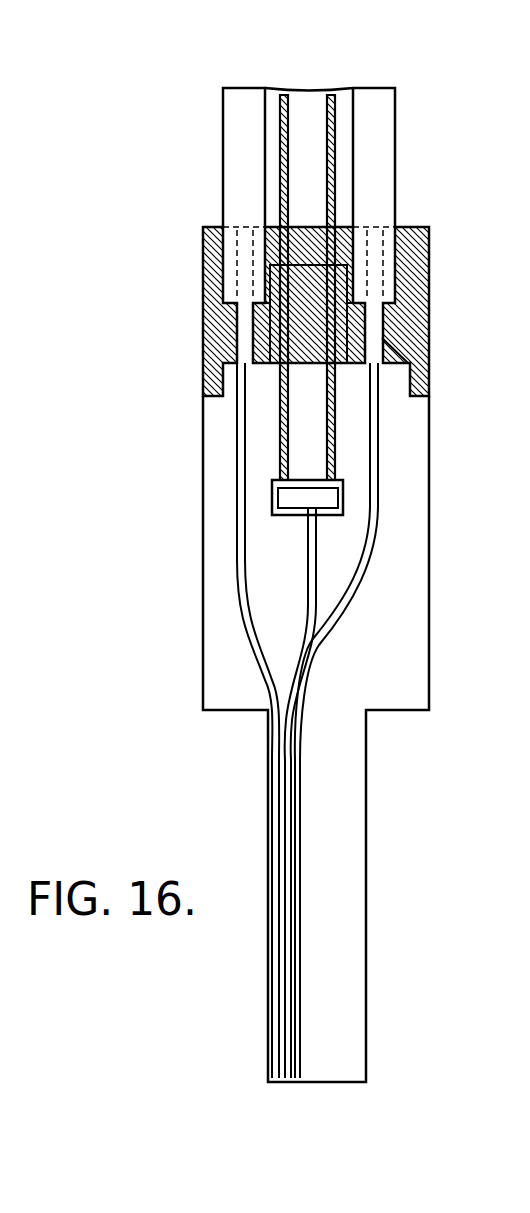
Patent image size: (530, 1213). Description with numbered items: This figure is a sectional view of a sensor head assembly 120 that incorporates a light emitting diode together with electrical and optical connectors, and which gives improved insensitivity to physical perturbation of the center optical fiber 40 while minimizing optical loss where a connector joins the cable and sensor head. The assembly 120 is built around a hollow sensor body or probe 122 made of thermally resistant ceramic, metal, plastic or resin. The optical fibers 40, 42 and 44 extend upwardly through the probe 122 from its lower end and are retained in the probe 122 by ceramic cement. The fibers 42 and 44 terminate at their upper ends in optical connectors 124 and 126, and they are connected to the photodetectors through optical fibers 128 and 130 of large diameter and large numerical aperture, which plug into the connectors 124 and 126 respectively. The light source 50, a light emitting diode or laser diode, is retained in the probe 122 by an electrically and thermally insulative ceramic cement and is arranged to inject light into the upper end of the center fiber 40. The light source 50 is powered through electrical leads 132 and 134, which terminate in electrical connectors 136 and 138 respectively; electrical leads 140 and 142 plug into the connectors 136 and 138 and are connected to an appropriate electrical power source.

The sensor head assembly 120 is at (158, 87).
The probe 122 is at (403, 677).
The optical connector 124 is at (428, 368).
The optical connector 126 is at (242, 332).
The optical fiber 128 is at (373, 178).
The optical fiber 130 is at (242, 130).
The electrical lead 132 is at (337, 429).
The electrical lead 134 is at (280, 423).
The electrical connector 136 is at (355, 262).
The electrical connector 138 is at (272, 280).
The electrical lead 140 is at (337, 122).
The electrical lead 142 is at (271, 110).
The light source 50 is at (347, 498).
The center optical fiber 40 is at (313, 583).
The optical fiber 42 is at (363, 568).
The optical fiber 44 is at (242, 637).